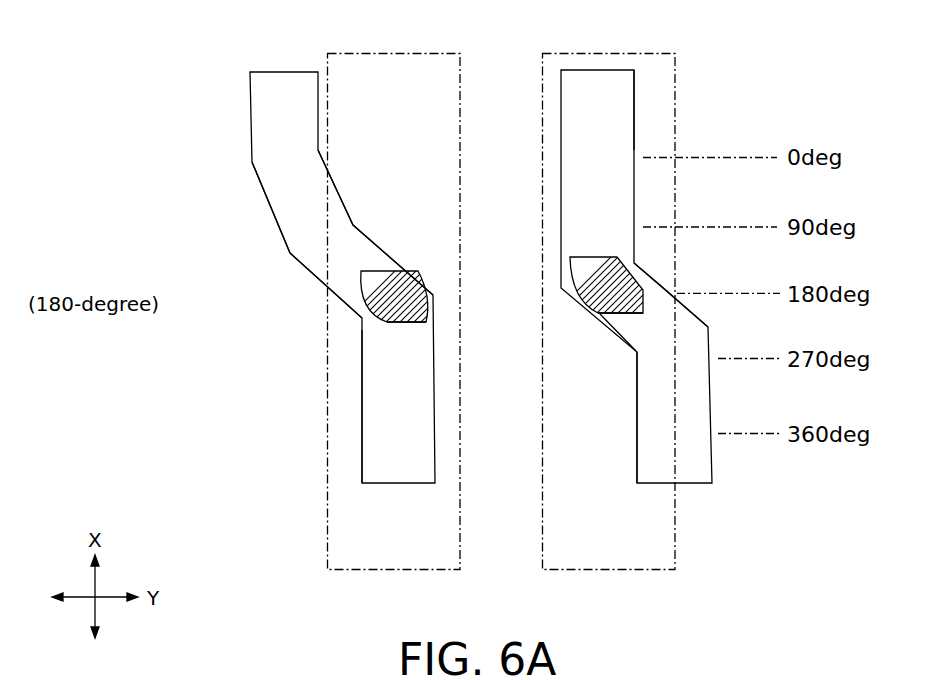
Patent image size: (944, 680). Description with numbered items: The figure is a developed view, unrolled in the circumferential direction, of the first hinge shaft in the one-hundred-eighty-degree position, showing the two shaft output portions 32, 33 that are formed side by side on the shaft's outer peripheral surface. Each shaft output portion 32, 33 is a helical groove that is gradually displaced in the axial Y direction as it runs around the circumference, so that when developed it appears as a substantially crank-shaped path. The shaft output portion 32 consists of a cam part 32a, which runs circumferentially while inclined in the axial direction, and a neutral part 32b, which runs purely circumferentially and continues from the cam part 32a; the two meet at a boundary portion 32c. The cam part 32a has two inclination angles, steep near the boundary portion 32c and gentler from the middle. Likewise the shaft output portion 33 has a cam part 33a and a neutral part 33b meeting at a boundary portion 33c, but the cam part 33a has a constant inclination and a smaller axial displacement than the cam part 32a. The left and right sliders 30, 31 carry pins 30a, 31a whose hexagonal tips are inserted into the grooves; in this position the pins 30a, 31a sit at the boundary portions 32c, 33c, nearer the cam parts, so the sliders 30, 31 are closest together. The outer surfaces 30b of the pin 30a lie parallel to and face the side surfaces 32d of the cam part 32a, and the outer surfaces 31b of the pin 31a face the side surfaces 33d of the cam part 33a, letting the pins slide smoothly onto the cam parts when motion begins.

The slider 30 is at (388, 573).
The pin 30a is at (410, 285).
The outer surfaces 30b is at (385, 322).
The slider 31 is at (606, 573).
The pin 31a is at (602, 316).
The outer surfaces 31b is at (627, 258).
The shaft output portion 32 is at (273, 95).
The cam part 32a is at (305, 264).
The neutral part 32b is at (362, 400).
The boundary portion 32c is at (362, 304).
The side surfaces 32d is at (322, 282).
The shaft output portion 33 is at (590, 92).
The cam part 33a is at (632, 350).
The neutral part 33b is at (633, 103).
The boundary portion 33c is at (640, 279).
The side surfaces 33d is at (737, 323).